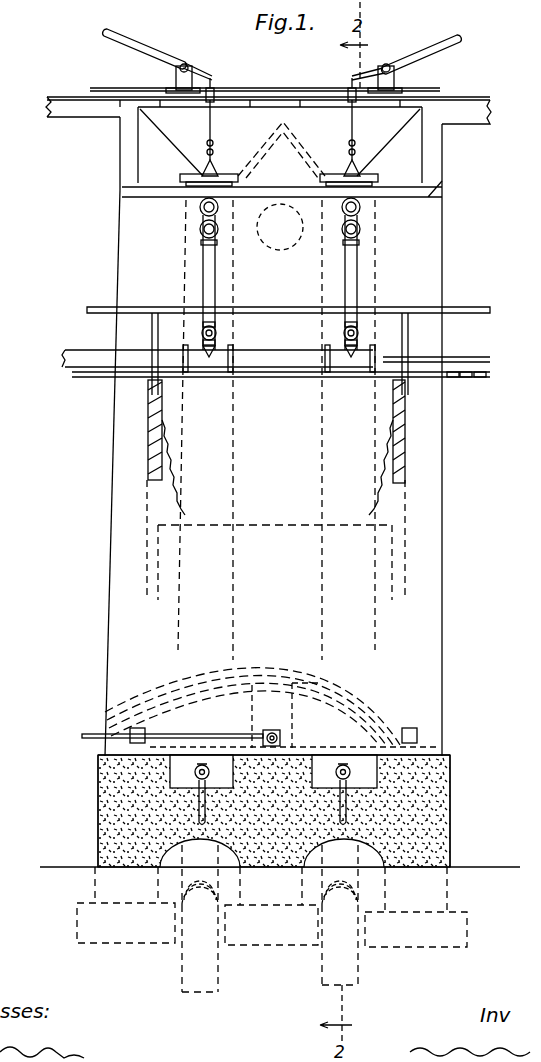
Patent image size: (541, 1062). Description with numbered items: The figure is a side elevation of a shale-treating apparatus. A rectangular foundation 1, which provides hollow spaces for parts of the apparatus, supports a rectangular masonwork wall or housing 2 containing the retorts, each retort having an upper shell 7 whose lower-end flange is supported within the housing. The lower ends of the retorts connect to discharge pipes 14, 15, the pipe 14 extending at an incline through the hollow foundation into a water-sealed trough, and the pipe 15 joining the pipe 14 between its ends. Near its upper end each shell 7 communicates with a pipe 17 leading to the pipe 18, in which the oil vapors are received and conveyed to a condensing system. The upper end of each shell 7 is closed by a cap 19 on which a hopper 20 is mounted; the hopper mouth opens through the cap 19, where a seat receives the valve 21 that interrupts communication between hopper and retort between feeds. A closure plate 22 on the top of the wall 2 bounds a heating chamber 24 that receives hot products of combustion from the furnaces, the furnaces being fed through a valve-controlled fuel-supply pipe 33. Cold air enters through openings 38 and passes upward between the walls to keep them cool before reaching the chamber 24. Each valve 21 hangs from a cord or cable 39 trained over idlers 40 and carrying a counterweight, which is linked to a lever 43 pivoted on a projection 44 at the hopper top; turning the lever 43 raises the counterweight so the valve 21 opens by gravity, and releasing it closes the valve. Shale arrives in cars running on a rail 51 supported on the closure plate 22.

The foundation 1 is at (452, 840).
The wall or housing 2 is at (436, 610).
The shell 7 is at (320, 472).
The discharge pipe 14 is at (202, 994).
The discharge pipe 15 is at (216, 884).
The pipe 17 is at (200, 213).
The pipe 18 is at (218, 350).
The cap 19 is at (180, 166).
The hopper 20 is at (254, 142).
The valve 21 is at (215, 167).
The closure plate 22 is at (438, 180).
The heating chamber 24 is at (276, 490).
The fuel-supply pipe 33 is at (268, 729).
The opening 38 is at (130, 741).
The cord or cable 39 is at (210, 130).
The idler 40 is at (214, 85).
The lever 43 is at (150, 43).
The projection 44 is at (188, 64).
The rail 51 is at (423, 92).